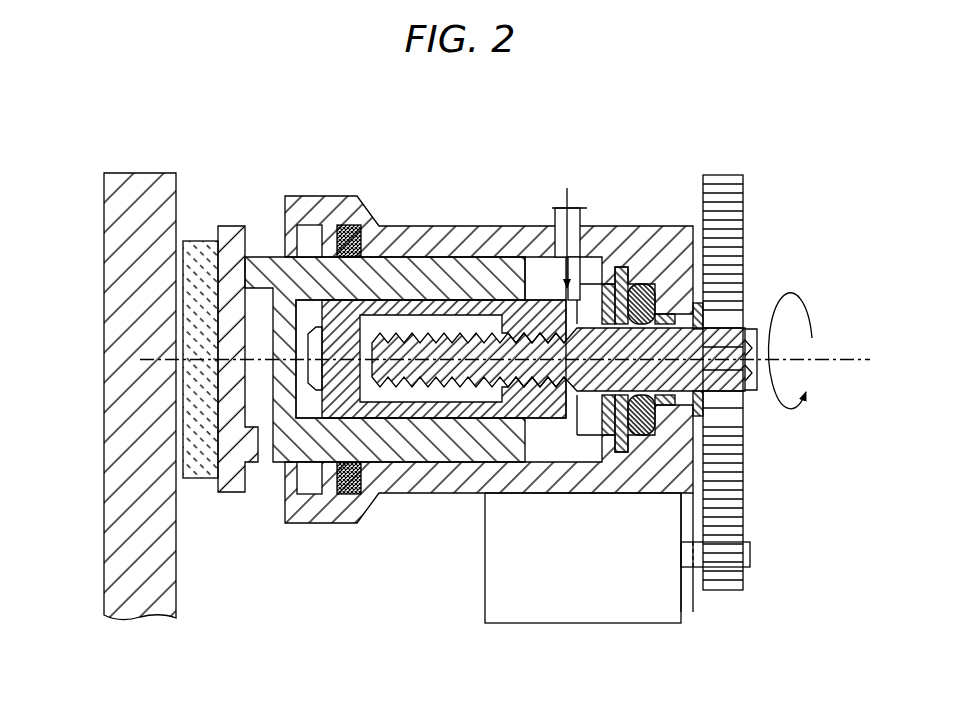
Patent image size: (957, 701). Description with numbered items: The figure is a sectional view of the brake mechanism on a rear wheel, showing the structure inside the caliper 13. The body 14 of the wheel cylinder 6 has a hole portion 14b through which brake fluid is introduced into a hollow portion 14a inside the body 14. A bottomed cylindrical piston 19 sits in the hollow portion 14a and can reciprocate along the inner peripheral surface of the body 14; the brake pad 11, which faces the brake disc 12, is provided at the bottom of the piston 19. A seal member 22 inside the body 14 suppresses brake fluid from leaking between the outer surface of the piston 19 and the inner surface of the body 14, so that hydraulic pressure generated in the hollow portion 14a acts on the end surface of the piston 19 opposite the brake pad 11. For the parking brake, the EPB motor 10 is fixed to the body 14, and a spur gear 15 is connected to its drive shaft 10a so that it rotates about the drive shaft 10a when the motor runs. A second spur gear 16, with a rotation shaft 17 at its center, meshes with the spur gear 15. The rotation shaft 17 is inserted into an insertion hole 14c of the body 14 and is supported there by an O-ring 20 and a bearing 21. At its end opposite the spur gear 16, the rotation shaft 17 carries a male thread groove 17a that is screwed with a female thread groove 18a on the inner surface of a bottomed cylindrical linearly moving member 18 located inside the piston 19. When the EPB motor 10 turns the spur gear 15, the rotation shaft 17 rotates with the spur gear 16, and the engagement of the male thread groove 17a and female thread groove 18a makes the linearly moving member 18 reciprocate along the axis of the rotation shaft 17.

The wheel cylinder 6 is at (462, 212).
The EPB motor 10 is at (555, 623).
The drive shaft 10a is at (693, 558).
The brake pad 11 is at (200, 480).
The brake disc 12 is at (104, 456).
The caliper 13 is at (617, 130).
The body 14 is at (497, 226).
The hollow portion 14a is at (543, 257).
The hole portion 14b is at (578, 240).
The insertion hole 14c is at (703, 306).
The spur gear 15 is at (748, 567).
The spur gear 16 is at (743, 213).
The rotation shaft 17 is at (705, 347).
The male thread groove 17a is at (470, 385).
The linearly moving member 18 is at (418, 405).
The female thread groove 18a is at (545, 400).
The piston 19 is at (385, 452).
The O-ring 20 is at (645, 437).
The bearing 21 is at (660, 415).
The seal member 22 is at (350, 485).